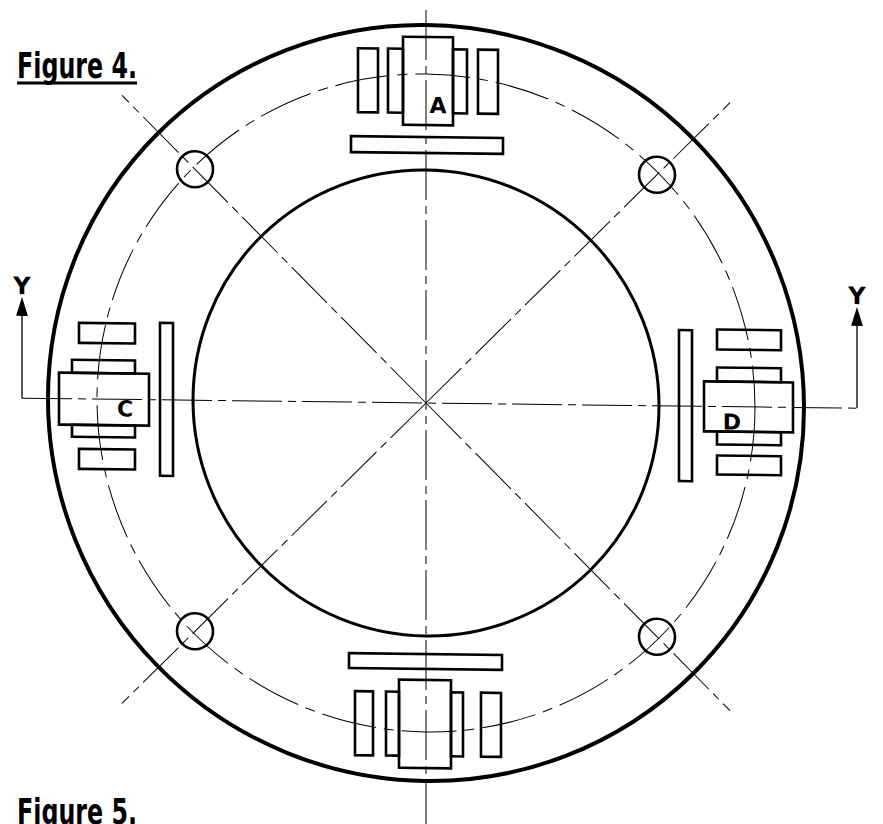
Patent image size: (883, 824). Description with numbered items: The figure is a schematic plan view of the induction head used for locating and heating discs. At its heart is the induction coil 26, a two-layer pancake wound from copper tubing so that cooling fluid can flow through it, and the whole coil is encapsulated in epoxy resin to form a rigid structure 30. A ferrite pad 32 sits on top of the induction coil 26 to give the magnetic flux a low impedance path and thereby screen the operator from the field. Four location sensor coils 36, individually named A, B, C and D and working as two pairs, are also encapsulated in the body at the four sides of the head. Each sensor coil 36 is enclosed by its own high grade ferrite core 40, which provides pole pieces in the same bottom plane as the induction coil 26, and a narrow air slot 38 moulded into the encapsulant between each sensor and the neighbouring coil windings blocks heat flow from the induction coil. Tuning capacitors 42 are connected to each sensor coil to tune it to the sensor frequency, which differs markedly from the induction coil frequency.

The induction coil 26 is at (335, 593).
The rigid structure 30 is at (747, 638).
The ferrite pad 32 is at (319, 576).
The location sensor coils 36 is at (472, 768).
The air slot 38 is at (343, 683).
The ferrite core 40 is at (439, 784).
The tuning capacitors 42 is at (365, 773).